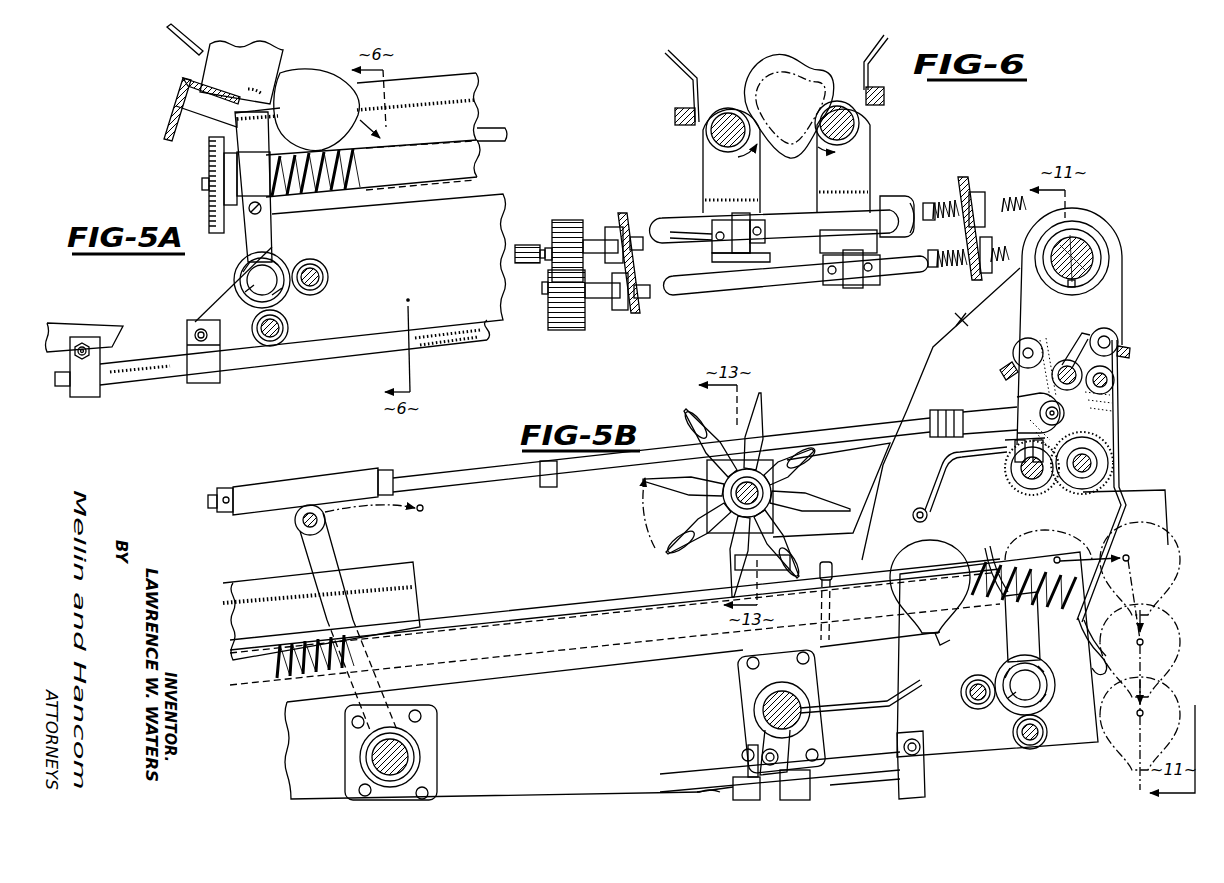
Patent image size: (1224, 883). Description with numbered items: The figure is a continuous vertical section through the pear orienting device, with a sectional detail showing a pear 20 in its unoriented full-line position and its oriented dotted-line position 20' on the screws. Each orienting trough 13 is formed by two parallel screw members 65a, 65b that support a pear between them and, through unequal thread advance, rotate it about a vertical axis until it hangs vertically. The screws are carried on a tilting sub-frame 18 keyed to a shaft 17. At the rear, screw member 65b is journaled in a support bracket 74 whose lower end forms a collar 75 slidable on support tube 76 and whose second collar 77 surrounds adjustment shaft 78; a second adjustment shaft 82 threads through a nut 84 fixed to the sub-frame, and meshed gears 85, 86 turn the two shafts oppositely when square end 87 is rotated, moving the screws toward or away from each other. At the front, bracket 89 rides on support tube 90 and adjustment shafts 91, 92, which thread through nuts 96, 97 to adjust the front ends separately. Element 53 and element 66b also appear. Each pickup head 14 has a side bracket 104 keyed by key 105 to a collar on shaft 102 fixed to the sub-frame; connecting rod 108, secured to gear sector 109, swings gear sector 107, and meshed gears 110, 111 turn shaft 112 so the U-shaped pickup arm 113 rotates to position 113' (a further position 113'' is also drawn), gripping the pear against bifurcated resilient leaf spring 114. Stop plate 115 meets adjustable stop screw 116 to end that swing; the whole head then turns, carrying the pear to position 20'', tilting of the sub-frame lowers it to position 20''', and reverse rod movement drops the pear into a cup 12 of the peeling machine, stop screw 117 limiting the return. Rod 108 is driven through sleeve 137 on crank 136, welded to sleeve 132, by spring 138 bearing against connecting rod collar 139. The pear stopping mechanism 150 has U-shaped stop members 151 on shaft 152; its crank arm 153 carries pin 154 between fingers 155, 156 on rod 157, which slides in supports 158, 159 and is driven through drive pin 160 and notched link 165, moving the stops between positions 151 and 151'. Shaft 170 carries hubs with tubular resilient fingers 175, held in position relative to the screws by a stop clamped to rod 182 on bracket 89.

In FIG. 5B, the pear receiving cup 12 is at (1193, 705).
In FIG. 6, the orienting trough 13 is at (738, 66).
In FIG. 6, the pickup head 14 is at (1012, 386).
In FIG. 5B, the shaft 17 is at (372, 756).
In FIG. 5A, the sub-frame 18 is at (508, 302).
In FIG. 6, the sub-frame 18 is at (962, 178).
In FIG. 5B, the sub-frame 18 is at (988, 752).
In FIG. 5A, the pear 20 is at (317, 110).
In FIG. 6, the pear 20 is at (788, 96).
In FIG. 5B, the pear 20 is at (921, 592).
In FIG. 5B, the cam position 20' is at (1032, 568).
In FIG. 5B, the dotted line pear position 20'' is at (1117, 560).
In FIG. 5B, the dotted line pear position 20''' is at (1153, 646).
In FIG. 5A, the pin 53 is at (182, 41).
In FIG. 6, the screw member 65a is at (862, 128).
In FIG. 5A, the screw member 65b is at (480, 158).
In FIG. 6, the screw member 65b is at (710, 148).
In FIG. 5B, the screw member 65b is at (558, 617).
In FIG. 5A, the gear 66b is at (207, 157).
In FIG. 5A, the support bracket 74 is at (262, 235).
In FIG. 6, the support bracket 74 is at (716, 186).
In FIG. 5A, the collar 75 is at (236, 282).
In FIG. 5A, the support tube 76 is at (248, 296).
In FIG. 6, the support tube 76 is at (903, 200).
In FIG. 5A, the second collar 77 is at (314, 283).
In FIG. 6, the second collar 77 is at (738, 216).
In FIG. 5A, the adjustment shaft 78 is at (328, 276).
In FIG. 6, the adjustment shaft 78 is at (790, 225).
In FIG. 5A, the second adjustment shaft 82 is at (290, 330).
In FIG. 6, the second adjustment shaft 82 is at (768, 285).
In FIG. 5A, the nut 84 is at (631, 318).
In FIG. 5A, the gear 85 is at (572, 220).
In FIG. 5A, the gear 86 is at (582, 327).
In FIG. 5A, the square end 87 is at (532, 245).
In FIG. 5B, the bracket 89 is at (1010, 640).
In FIG. 5B, the support tube 90 is at (1045, 698).
In FIG. 5B, the adjustment shaft 91 is at (980, 705).
In FIG. 5B, the adjustment shaft 92 is at (1035, 747).
In FIG. 6, the nut 96 is at (980, 192).
In FIG. 6, the nut 97 is at (990, 245).
In FIG. 6, the shaft 102 is at (1078, 250).
In FIG. 6, the side bracket 104 is at (1112, 272).
In FIG. 6, the key 105 is at (1068, 288).
In FIG. 6, the gear sector 107 is at (1030, 400).
In FIG. 6, the connecting rod 108 is at (886, 428).
In FIG. 6, the gear sector 109 is at (1062, 415).
In FIG. 6, the gear 110 is at (1082, 490).
In FIG. 6, the gear 111 is at (1030, 492).
In FIG. 6, the shaft 112 is at (1020, 471).
In FIG. 6, the pickup arm 113 is at (950, 484).
In FIG. 5B, the dotted line position of pickup arm 113' is at (978, 562).
In FIG. 5B, the tube 113'' is at (1076, 646).
In FIG. 6, the bifurcated resilient leaf spring 114 is at (1118, 482).
In FIG. 6, the stop plate 115 is at (1076, 340).
In FIG. 6, the adjustable stop screw 116 is at (1045, 330).
In FIG. 6, the adjustable stop screw 117 is at (1110, 330).
In FIG. 5B, the sleeve 132 is at (368, 770).
In FIG. 5B, the crank 136 is at (345, 562).
In FIG. 5B, the sleeve 137 is at (345, 475).
In FIG. 5B, the spring 138 is at (394, 478).
In FIG. 5B, the connecting rod collar 139 is at (548, 487).
In FIG. 5B, the pear stopping mechanism 150 is at (742, 684).
In FIG. 5B, the stop member 151 is at (861, 694).
In FIG. 5B, the dotted line position of stop member 151' is at (838, 588).
In FIG. 5B, the shaft 152 is at (786, 690).
In FIG. 5B, the crank arm 153 is at (762, 742).
In FIG. 5B, the pin 154 is at (766, 762).
In FIG. 5B, the finger 155 is at (748, 758).
In FIG. 5B, the finger 156 is at (790, 760).
In FIG. 5A, the rod 157 is at (379, 345).
In FIG. 5B, the rod 157 is at (780, 767).
In FIG. 5A, the support 158 is at (212, 380).
In FIG. 5B, the support 159 is at (927, 786).
In FIG. 5A, the drive pin 160 is at (84, 342).
In FIG. 5A, the notched link 165 is at (53, 324).
In FIG. 5B, the shaft 170 is at (772, 490).
In FIG. 5B, the tubular resilient fingers 175 is at (733, 560).
In FIG. 5B, the rod 182 is at (225, 635).